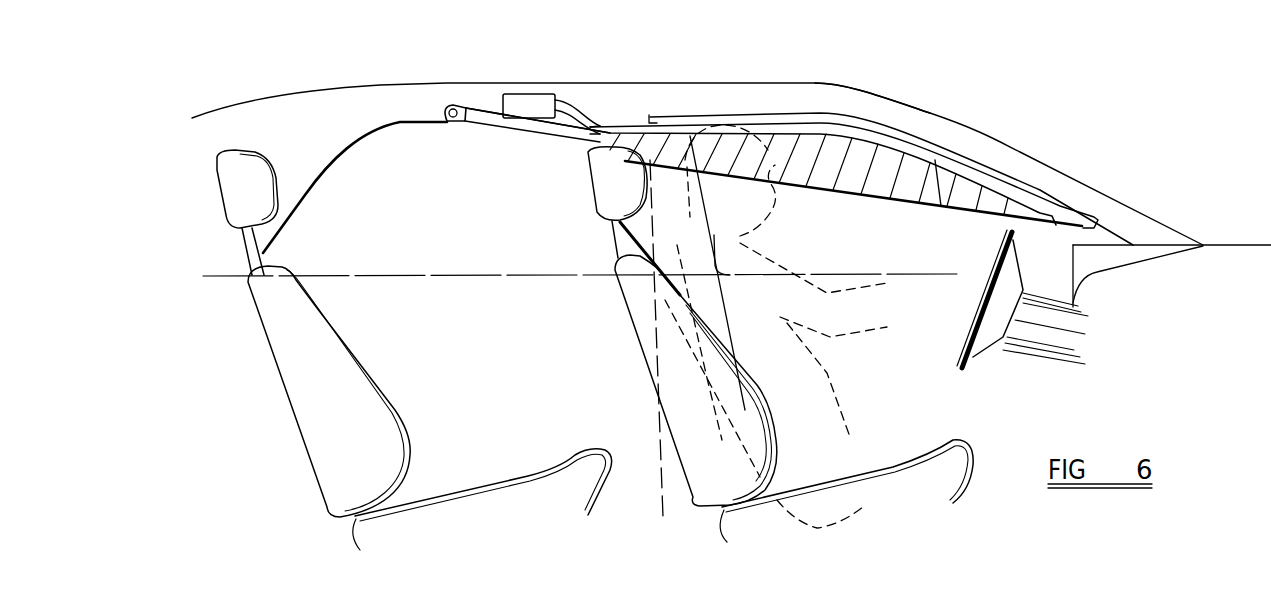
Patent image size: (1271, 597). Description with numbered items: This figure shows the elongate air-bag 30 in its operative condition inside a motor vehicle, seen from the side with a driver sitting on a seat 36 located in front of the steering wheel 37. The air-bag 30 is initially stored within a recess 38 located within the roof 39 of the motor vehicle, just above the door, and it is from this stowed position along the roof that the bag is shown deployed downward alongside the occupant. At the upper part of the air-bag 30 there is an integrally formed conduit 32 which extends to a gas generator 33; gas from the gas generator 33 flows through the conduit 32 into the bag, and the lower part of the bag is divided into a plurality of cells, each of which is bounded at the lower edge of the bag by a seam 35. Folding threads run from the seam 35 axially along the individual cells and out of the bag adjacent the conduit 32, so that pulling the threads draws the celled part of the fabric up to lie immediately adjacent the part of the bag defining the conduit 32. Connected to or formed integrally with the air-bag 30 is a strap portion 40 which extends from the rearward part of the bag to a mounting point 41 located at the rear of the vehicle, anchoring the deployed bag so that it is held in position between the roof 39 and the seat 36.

The air-bag 30 is at (853, 163).
The conduit 32 is at (590, 125).
The gas generator 33 is at (532, 100).
The seam 35 is at (941, 206).
The seat 36 is at (633, 313).
The steering wheel 37 is at (1020, 290).
The recess 38 is at (657, 115).
The roof 39 is at (873, 113).
The strap portion 40 is at (481, 117).
The mounting point 41 is at (447, 109).